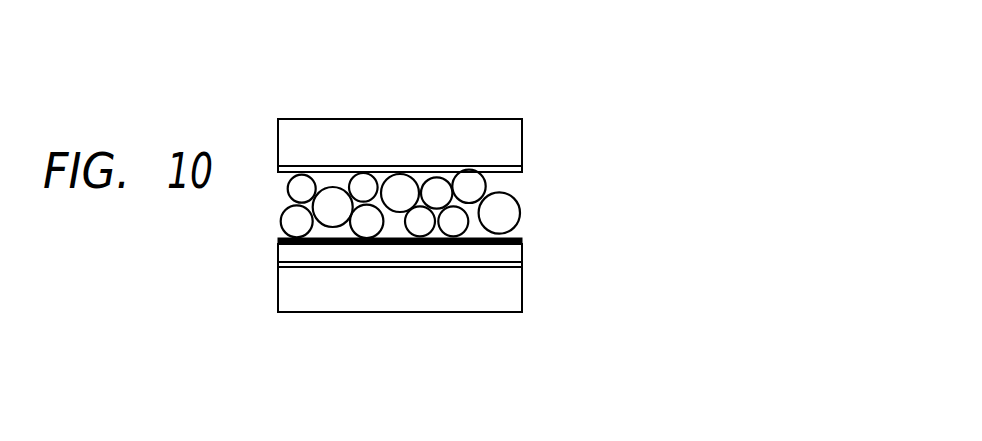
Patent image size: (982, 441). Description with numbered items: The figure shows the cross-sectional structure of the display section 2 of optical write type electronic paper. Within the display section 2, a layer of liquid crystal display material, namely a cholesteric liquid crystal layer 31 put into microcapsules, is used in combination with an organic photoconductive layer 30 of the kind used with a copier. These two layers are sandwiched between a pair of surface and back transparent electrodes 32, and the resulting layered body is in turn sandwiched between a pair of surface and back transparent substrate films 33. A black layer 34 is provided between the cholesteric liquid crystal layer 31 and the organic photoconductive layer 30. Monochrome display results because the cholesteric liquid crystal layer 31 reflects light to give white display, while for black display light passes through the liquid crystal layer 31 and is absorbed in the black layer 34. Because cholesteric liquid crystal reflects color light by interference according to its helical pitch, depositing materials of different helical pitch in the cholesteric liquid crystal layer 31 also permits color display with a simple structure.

The display section 2 is at (451, 118).
The organic photoconductive layer 30 is at (469, 253).
The cholesteric liquid crystal layer 31 is at (398, 182).
The transparent electrodes 32 is at (517, 169).
The transparent substrate films 33 is at (513, 130).
The black layer 34 is at (516, 236).